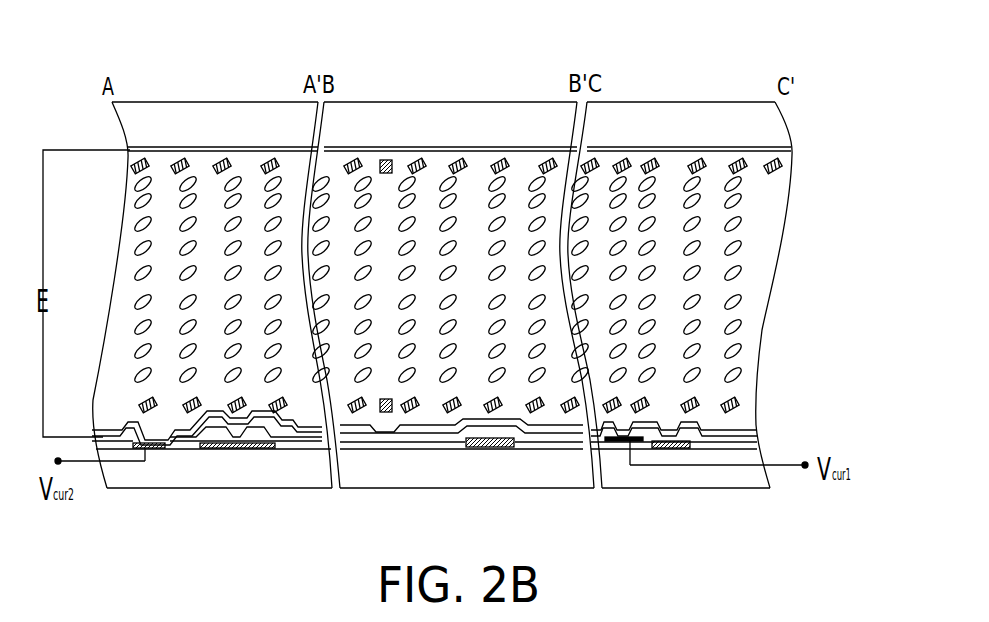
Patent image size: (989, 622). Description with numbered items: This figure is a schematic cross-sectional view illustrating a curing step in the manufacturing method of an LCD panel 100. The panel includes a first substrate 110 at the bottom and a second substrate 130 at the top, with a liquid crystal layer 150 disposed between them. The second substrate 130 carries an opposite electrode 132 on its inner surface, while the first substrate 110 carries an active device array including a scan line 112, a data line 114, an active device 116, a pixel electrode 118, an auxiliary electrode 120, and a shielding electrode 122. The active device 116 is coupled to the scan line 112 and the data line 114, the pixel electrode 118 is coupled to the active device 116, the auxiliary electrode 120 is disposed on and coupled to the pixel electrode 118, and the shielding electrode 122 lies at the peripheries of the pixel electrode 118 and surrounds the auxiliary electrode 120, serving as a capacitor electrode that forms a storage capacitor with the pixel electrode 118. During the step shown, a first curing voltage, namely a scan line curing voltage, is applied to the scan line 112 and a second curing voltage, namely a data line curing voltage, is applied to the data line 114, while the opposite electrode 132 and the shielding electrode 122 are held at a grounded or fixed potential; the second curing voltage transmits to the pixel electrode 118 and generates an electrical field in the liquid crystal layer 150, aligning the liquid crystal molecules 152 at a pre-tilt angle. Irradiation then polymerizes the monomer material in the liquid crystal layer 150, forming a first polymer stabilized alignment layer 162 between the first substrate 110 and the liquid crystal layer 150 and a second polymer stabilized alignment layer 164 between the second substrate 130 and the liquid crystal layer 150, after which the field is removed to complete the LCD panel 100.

The LCD panel 100 is at (842, 552).
The first substrate 110 is at (690, 498).
The scan line 112 is at (614, 441).
The data line 114 is at (146, 449).
The active device 116 is at (230, 460).
The pixel electrode 118 is at (357, 443).
The auxiliary electrode 120 is at (396, 434).
The shielding electrode 122 is at (488, 421).
The second substrate 130 is at (642, 99).
The opposite electrode 132 is at (790, 150).
The liquid crystal layer 150 is at (803, 178).
The liquid crystal molecules 152 is at (401, 172).
The first polymer stabilized alignment layer 162 is at (803, 396).
The second polymer stabilized alignment layer 164 is at (803, 152).